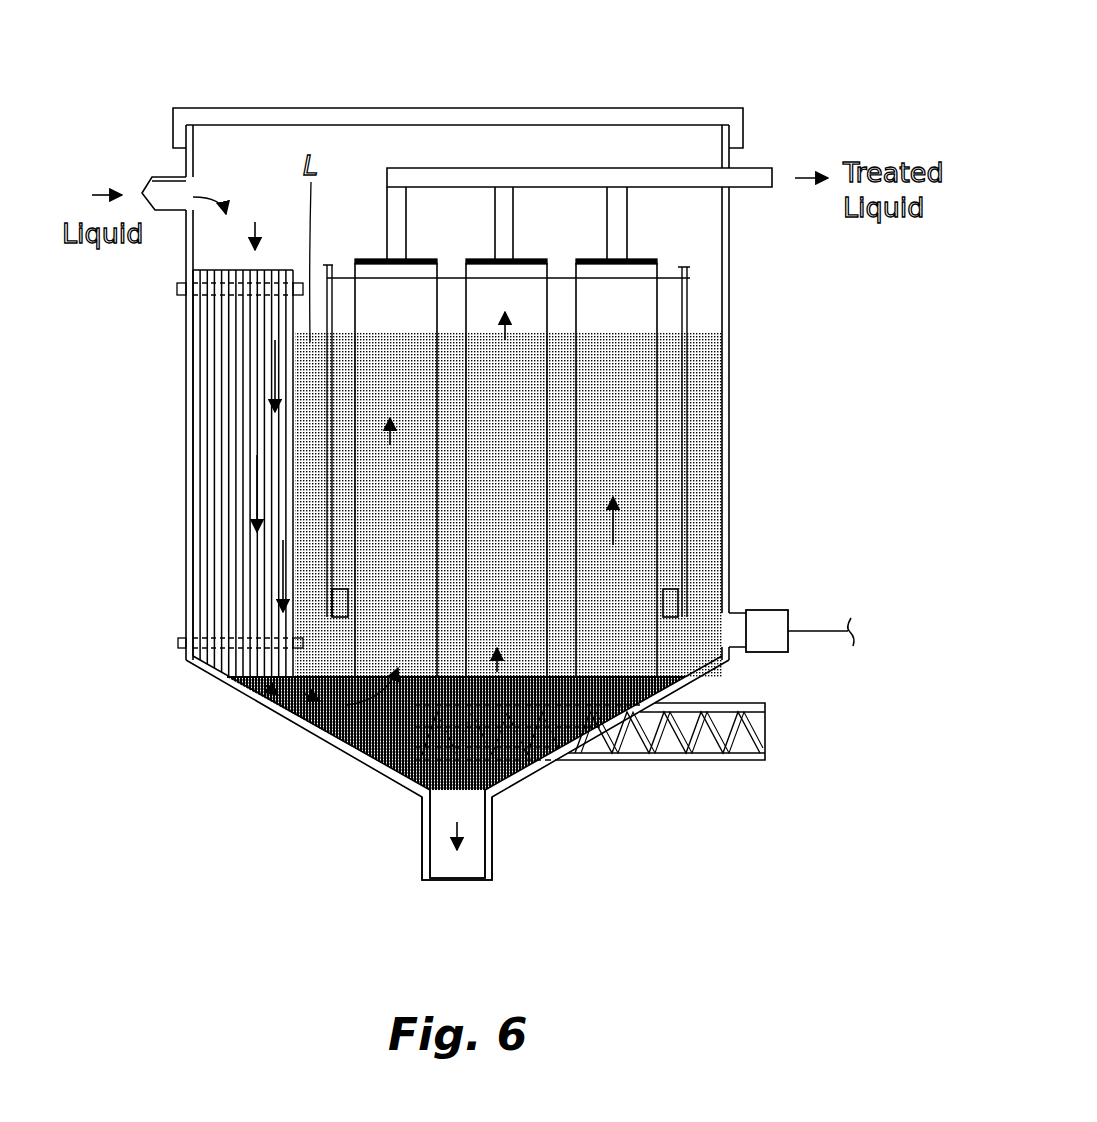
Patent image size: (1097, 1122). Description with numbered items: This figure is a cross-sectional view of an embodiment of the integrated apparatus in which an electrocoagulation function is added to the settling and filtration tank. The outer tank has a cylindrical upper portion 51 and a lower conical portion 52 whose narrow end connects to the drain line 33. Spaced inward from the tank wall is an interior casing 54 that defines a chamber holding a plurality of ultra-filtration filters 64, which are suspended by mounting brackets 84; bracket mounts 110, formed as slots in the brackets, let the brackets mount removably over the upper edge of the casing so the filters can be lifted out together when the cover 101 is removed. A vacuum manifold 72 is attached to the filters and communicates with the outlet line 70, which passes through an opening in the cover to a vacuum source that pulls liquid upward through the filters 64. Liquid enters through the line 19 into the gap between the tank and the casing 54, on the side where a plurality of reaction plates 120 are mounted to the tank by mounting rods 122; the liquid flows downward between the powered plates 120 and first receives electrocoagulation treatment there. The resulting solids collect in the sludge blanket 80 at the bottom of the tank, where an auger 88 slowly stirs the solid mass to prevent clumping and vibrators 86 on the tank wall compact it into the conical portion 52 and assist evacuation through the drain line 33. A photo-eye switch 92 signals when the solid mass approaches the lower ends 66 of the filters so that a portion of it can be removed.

The line 19 is at (169, 183).
The drain line 33 is at (493, 837).
The cylindrical upper portion 51 is at (186, 430).
The lower conical portion 52 is at (573, 812).
The interior casing 54 is at (327, 366).
The ultra-filtration filters 64 is at (412, 308).
The lower ends of the filters 66 is at (617, 678).
The outlet line 70 is at (692, 178).
The vacuum manifold 72 is at (500, 207).
The sludge blanket 80 is at (402, 758).
The mounting brackets 84 is at (367, 266).
The vibrators 86 is at (332, 598).
The auger 88 is at (690, 760).
The photo-eye switch 92 is at (768, 622).
The cover 101 is at (487, 118).
The bracket mounts 110 is at (690, 270).
The reaction plates 120 is at (227, 268).
The mounting rods 122 is at (300, 283).